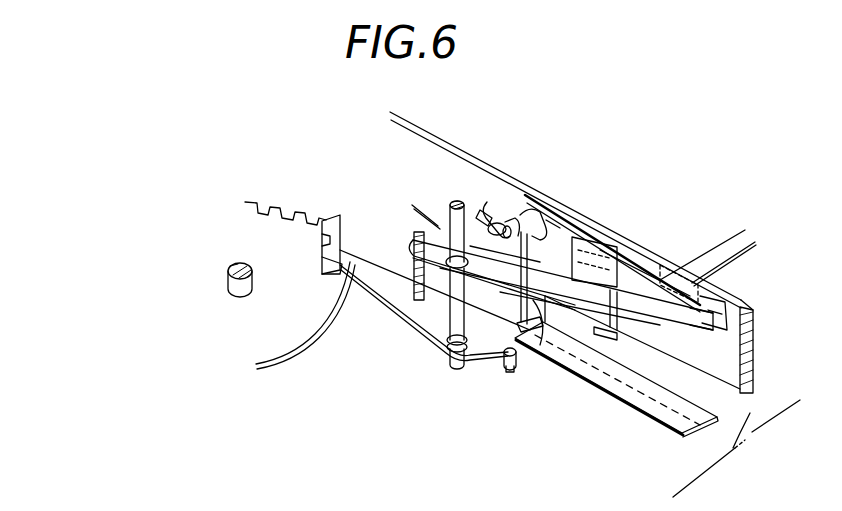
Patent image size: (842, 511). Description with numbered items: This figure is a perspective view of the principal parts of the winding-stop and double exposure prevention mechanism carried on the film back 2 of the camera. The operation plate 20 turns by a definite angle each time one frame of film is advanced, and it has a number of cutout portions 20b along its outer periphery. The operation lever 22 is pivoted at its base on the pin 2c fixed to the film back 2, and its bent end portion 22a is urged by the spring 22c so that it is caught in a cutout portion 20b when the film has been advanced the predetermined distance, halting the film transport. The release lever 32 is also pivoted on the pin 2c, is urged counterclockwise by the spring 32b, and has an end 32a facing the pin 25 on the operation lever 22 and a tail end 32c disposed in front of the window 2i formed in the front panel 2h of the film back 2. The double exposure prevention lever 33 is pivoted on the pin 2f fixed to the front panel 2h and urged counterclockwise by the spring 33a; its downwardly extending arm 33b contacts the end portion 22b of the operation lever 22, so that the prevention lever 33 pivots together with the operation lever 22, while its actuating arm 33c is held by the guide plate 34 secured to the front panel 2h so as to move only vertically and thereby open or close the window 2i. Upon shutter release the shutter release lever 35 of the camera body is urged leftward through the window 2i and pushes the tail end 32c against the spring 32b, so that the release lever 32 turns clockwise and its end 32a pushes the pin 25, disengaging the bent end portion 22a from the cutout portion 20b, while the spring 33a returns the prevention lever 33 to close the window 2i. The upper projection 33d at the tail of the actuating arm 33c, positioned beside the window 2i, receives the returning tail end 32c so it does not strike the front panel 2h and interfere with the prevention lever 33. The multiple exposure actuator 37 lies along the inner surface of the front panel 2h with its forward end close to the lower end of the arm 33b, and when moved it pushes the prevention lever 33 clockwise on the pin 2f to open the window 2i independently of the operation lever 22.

The film back 2 is at (703, 457).
The pin 2c is at (462, 200).
The pin 2f is at (530, 200).
The front panel 2h is at (452, 145).
The window 2i is at (668, 262).
The operation plate 20 is at (305, 338).
The cutout portions 20b is at (262, 205).
The operation lever 22 is at (383, 287).
The bent end portion 22a is at (325, 218).
The end portion 22b is at (538, 340).
The spring 22c is at (483, 353).
The pin 25 is at (413, 210).
The release lever 32 is at (545, 255).
The end 32a is at (418, 250).
The spring 32b is at (453, 205).
The tail end 32c is at (644, 304).
The double exposure prevention lever 33 is at (750, 333).
The spring 33a is at (495, 195).
The downwardly extending arm 33b is at (528, 298).
The actuating arm 33c is at (632, 249).
The upper projection 33d is at (723, 305).
The guide plate 34 is at (592, 242).
The shutter release lever 35 is at (712, 247).
The multiple exposure actuator 37 is at (622, 392).